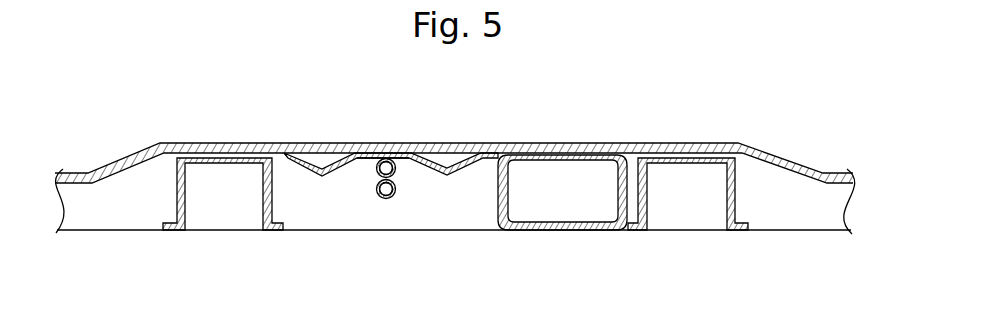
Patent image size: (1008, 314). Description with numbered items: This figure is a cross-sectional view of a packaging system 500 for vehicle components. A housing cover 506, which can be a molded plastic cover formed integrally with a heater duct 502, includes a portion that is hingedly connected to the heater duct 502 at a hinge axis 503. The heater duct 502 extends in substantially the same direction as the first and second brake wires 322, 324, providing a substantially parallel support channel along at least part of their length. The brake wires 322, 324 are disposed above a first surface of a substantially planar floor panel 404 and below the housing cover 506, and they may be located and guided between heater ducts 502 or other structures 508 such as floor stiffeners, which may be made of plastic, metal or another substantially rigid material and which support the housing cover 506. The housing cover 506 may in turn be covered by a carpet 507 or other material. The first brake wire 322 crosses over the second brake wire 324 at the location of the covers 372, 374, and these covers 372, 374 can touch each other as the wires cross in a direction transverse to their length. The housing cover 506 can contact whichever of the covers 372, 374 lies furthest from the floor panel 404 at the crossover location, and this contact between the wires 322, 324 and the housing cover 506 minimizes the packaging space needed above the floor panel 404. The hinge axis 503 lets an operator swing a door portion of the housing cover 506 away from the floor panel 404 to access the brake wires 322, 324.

The packaging system 500 is at (788, 101).
The heater duct 502 is at (585, 183).
The hinge axis 503 is at (495, 155).
The housing cover 506 is at (383, 155).
The carpet 507 is at (684, 153).
The structures 508 is at (177, 198).
The floor panel 404 is at (423, 230).
The first brake wire 322 is at (377, 169).
The second brake wire 324 is at (380, 191).
The cover of first brake wire 372 is at (395, 168).
The cover of second brake wire 374 is at (392, 194).